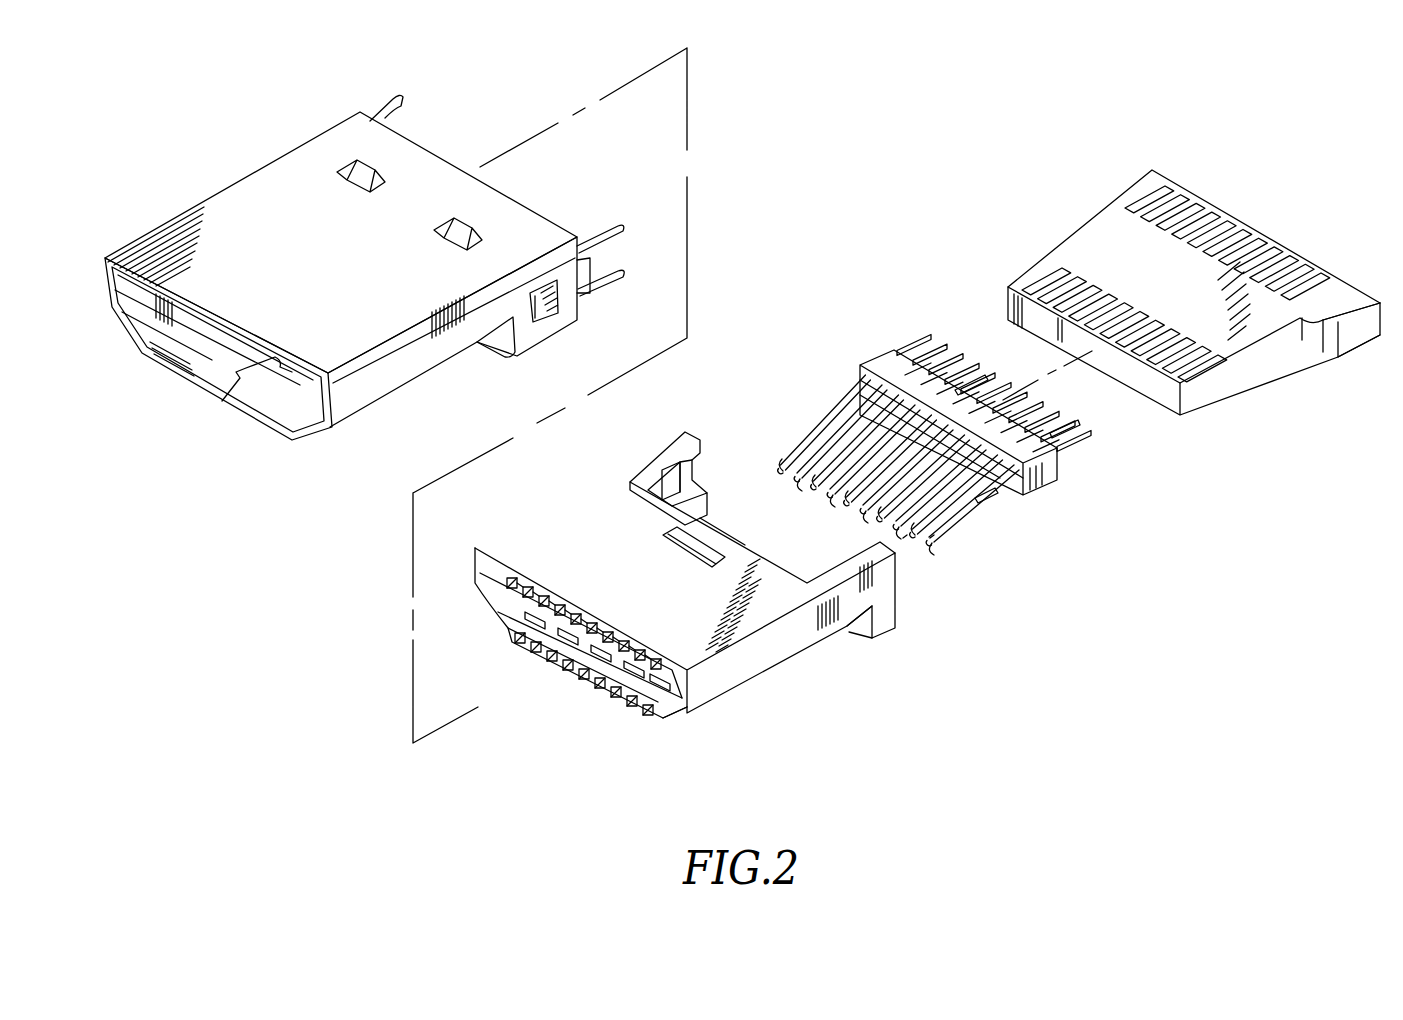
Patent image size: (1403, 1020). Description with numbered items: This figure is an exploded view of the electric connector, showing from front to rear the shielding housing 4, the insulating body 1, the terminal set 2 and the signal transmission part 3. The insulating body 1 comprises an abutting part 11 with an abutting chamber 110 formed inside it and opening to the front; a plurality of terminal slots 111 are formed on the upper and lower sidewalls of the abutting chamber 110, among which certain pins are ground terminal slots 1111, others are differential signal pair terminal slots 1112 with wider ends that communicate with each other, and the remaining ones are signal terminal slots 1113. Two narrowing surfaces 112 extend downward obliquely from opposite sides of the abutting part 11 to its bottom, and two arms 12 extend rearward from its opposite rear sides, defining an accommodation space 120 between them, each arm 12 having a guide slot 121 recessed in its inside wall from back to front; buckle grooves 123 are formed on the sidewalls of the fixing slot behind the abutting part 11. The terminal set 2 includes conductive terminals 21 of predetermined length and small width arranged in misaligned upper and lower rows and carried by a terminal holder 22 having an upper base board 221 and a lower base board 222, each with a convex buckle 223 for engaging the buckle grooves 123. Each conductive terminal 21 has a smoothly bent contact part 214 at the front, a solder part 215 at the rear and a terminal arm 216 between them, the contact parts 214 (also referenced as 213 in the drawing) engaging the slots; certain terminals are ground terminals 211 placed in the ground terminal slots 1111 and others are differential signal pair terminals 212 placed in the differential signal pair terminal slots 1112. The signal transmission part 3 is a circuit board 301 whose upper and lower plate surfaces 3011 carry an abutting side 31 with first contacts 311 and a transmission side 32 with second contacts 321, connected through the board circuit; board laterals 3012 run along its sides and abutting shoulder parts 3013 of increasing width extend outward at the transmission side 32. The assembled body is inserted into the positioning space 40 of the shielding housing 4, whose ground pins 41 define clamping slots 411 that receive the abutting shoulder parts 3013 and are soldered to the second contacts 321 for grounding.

The insulating body 1 is at (660, 628).
The abutting part 11 is at (597, 693).
The abutting chamber 110 is at (545, 624).
The terminal slots 111 is at (567, 670).
The ground terminal slots 1111 is at (538, 597).
The differential signal pair terminal slots 1112 is at (525, 592).
The signal terminal slots 1113 is at (655, 668).
The narrowing surface 112 is at (668, 714).
The arms 12 is at (633, 473).
The accommodation space 120 is at (722, 505).
The guide slot 121 is at (662, 490).
The buckle grooves 123 is at (660, 543).
The terminal set 2 is at (922, 478).
The conductive terminals 21 is at (867, 493).
The ground terminals 211 is at (863, 467).
The differential signal pair terminals 212 is at (851, 462).
The contacting portions 213 is at (930, 538).
The contact part 214 is at (990, 600).
The solder part 215 is at (1068, 432).
The terminal arm 216 is at (980, 498).
The terminal holder 22 is at (995, 466).
The upper base board 221 is at (1062, 458).
The lower base board 222 is at (1023, 483).
The convex buckle 223 is at (968, 392).
The signal transmission part 3 is at (1204, 306).
The circuit board 301 is at (1075, 195).
The upper and lower plate surfaces 3011 is at (1105, 268).
The board laterals 3012 is at (1250, 355).
The abutting shoulder parts 3013 is at (1353, 330).
The abutting side 31 is at (1124, 398).
The first contacts 311 is at (1182, 367).
The transmission side 32 is at (1227, 201).
The second contacts 321 is at (1238, 230).
The shielding housing 4 is at (391, 260).
The positioning space 40 is at (207, 365).
The ground pins 41 is at (600, 240).
The clamping slots 411 is at (598, 264).